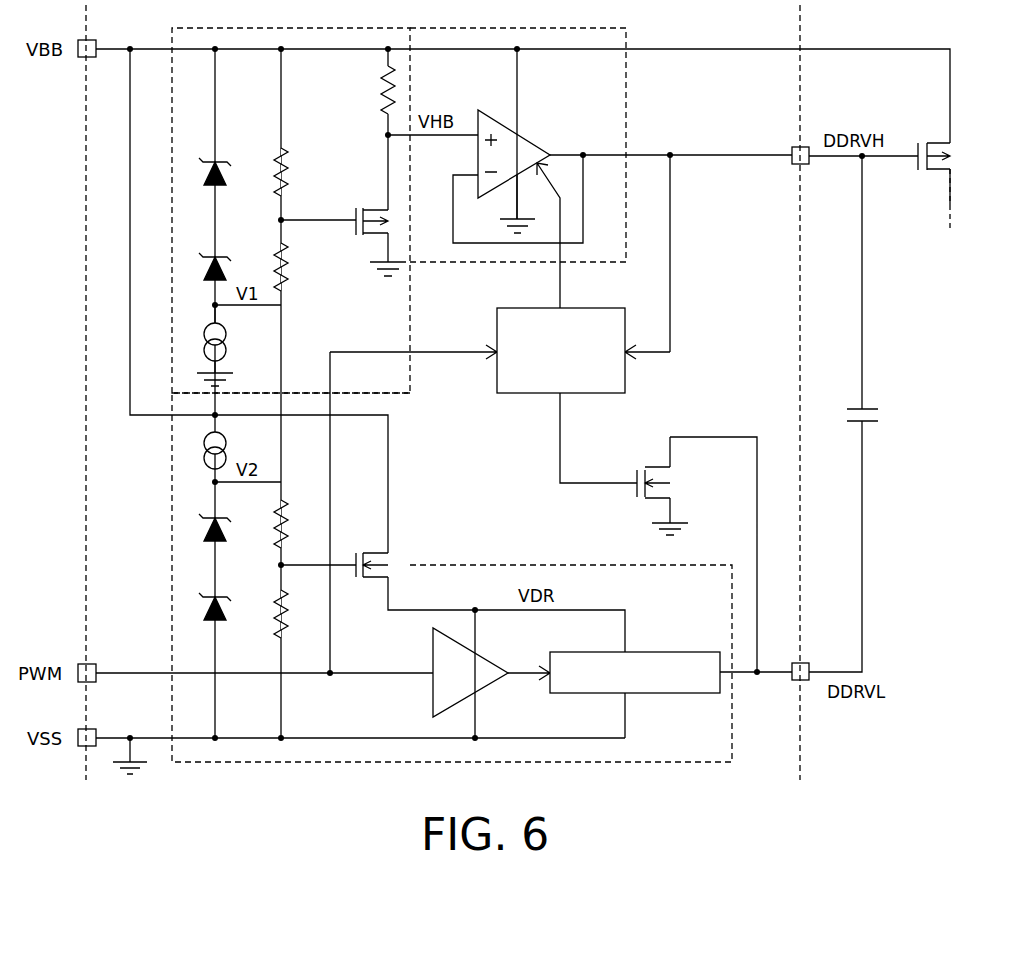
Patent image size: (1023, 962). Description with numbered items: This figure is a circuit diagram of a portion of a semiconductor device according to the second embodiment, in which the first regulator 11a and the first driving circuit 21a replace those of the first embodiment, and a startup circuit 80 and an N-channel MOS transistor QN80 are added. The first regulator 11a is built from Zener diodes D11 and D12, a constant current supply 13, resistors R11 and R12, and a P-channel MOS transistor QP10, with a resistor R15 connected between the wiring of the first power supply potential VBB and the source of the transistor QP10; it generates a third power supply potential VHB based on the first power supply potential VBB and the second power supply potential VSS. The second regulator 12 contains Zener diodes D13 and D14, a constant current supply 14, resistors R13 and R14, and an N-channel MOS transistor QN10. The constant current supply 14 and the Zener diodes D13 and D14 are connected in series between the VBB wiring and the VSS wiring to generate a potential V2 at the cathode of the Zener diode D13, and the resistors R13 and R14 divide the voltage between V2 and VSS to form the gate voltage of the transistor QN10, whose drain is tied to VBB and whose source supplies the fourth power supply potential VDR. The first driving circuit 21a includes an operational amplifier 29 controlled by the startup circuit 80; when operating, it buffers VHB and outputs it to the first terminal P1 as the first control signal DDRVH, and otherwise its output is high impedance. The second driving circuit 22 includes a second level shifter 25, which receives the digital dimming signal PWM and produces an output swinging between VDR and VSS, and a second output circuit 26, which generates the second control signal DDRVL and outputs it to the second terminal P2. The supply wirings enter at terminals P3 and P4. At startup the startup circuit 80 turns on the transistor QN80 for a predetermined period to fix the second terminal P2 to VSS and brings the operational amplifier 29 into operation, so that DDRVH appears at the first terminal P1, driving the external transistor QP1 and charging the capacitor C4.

The first regulator 11a is at (410, 303).
The first driving circuit 21a is at (627, 90).
The second regulator 12 is at (410, 485).
The second driving circuit 22 is at (563, 565).
The constant current supply 13 is at (228, 343).
The constant current supply 14 is at (228, 447).
The second level shifter 25 is at (480, 653).
The second output circuit 26 is at (659, 652).
The operational amplifier 29 is at (527, 140).
The startup circuit 80 is at (600, 308).
The first terminal P1 is at (788, 145).
The second terminal P2 is at (788, 662).
The terminal P3 is at (99, 39).
The terminal P4 is at (112, 742).
The Zener diode D11 is at (227, 163).
The Zener diode D12 is at (227, 257).
The Zener diode D13 is at (227, 516).
The Zener diode D14 is at (227, 597).
The resistor R11 is at (298, 169).
The resistor R12 is at (298, 262).
The resistor R13 is at (298, 516).
The resistor R14 is at (298, 606).
The resistor R15 is at (366, 92).
The P-channel MOS transistor QP10 is at (334, 209).
The N-channel MOS transistor QN10 is at (334, 553).
The N-channel MOS transistor QN80 is at (682, 482).
The P-channel MOS transistor QP1 is at (954, 156).
The capacitor C4 is at (870, 404).